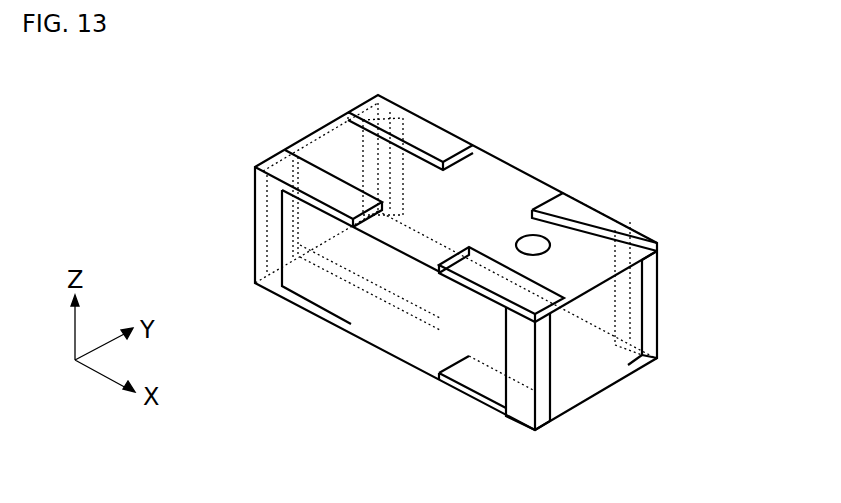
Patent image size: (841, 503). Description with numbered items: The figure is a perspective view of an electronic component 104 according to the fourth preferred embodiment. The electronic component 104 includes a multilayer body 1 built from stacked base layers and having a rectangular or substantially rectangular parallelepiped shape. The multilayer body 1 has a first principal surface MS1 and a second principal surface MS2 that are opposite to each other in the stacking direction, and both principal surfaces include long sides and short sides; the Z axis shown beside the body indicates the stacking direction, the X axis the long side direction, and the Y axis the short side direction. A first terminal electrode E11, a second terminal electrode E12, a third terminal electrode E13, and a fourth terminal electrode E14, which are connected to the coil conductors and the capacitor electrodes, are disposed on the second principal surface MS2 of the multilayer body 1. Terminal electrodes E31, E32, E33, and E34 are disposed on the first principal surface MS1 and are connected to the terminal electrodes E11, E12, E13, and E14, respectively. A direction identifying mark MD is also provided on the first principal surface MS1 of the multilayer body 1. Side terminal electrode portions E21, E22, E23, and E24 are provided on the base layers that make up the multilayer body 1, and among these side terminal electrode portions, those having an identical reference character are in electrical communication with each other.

The electronic component 104 is at (706, 93).
The multilayer body 1 is at (487, 167).
The first terminal electrode E11 is at (300, 305).
The second terminal electrode E12 is at (493, 403).
The third terminal electrode E13 is at (418, 267).
The fourth terminal electrode E14 is at (660, 375).
The side terminal electrode portion E21 is at (262, 240).
The side terminal electrode portion E22 is at (547, 362).
The side terminal electrode portion E23 is at (370, 148).
The side terminal electrode portion E24 is at (650, 327).
The terminal electrode E31 is at (298, 170).
The terminal electrode E32 is at (490, 270).
The terminal electrode E33 is at (420, 137).
The terminal electrode E34 is at (617, 235).
The first principal surface MS1 is at (465, 205).
The second principal surface MS2 is at (423, 333).
The direction identifying mark MD is at (536, 242).